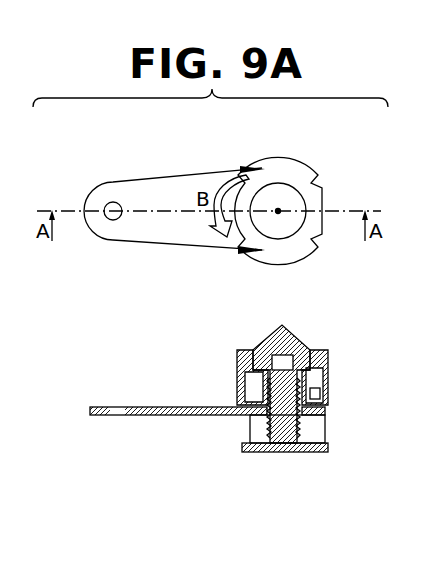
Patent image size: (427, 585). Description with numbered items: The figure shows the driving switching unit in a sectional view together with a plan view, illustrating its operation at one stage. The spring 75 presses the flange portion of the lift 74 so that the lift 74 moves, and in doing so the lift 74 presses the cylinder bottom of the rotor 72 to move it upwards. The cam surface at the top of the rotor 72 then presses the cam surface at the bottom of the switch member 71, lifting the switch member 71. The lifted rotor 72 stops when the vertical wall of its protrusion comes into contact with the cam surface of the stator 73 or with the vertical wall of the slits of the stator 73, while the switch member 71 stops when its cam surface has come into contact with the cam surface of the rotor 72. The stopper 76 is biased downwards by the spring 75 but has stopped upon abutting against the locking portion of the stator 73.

The switch member 71 is at (282, 194).
The rotor 72 is at (328, 382).
The stator 73 is at (283, 264).
The lift 74 is at (193, 242).
The spring 75 is at (250, 431).
The stopper 76 is at (286, 452).